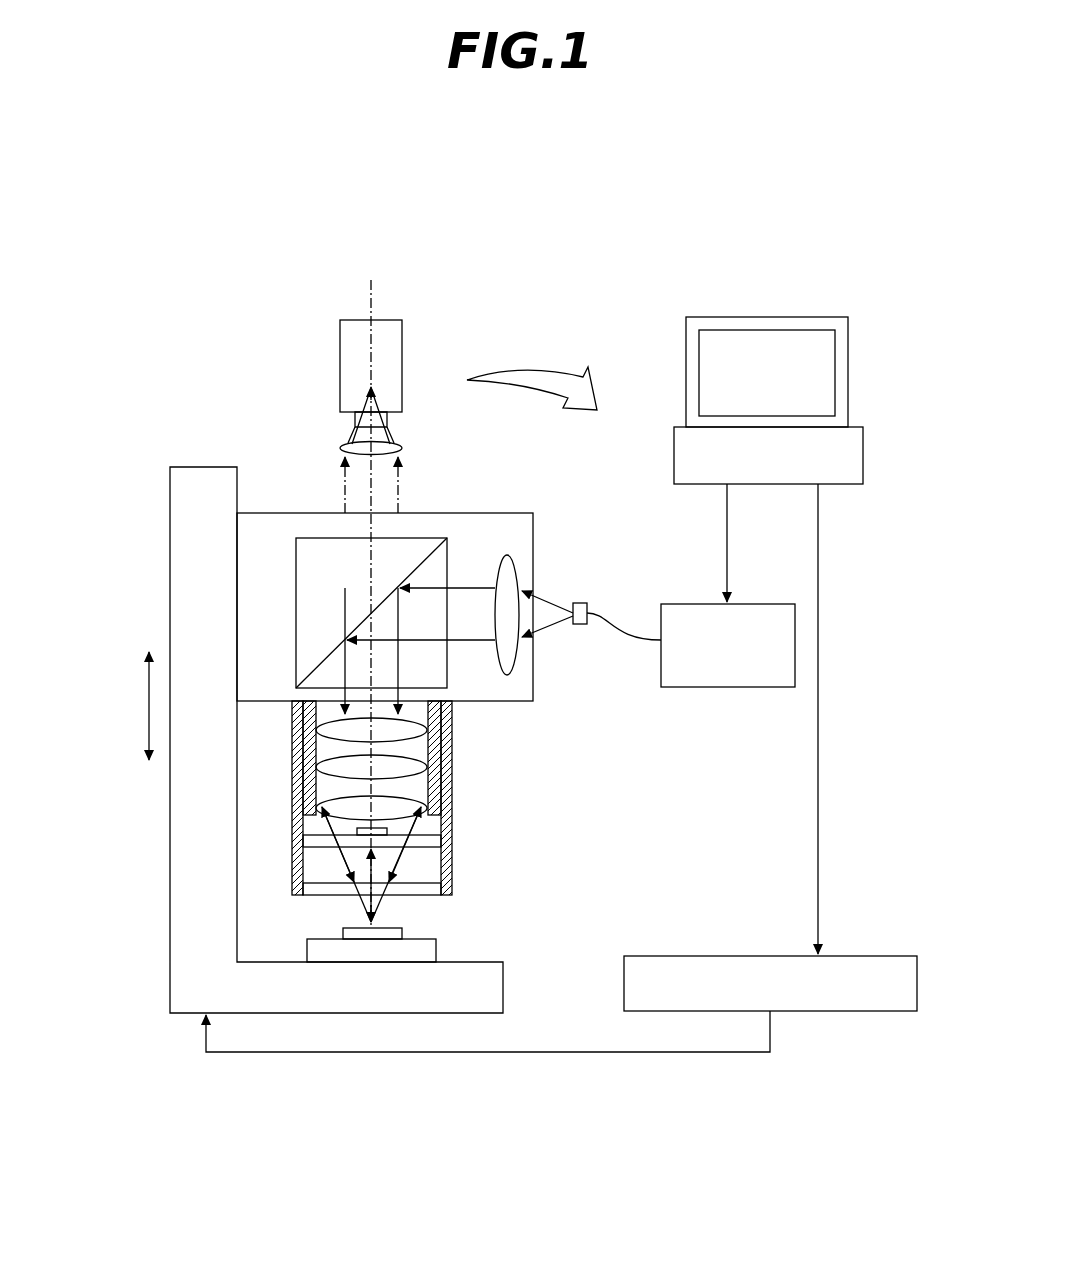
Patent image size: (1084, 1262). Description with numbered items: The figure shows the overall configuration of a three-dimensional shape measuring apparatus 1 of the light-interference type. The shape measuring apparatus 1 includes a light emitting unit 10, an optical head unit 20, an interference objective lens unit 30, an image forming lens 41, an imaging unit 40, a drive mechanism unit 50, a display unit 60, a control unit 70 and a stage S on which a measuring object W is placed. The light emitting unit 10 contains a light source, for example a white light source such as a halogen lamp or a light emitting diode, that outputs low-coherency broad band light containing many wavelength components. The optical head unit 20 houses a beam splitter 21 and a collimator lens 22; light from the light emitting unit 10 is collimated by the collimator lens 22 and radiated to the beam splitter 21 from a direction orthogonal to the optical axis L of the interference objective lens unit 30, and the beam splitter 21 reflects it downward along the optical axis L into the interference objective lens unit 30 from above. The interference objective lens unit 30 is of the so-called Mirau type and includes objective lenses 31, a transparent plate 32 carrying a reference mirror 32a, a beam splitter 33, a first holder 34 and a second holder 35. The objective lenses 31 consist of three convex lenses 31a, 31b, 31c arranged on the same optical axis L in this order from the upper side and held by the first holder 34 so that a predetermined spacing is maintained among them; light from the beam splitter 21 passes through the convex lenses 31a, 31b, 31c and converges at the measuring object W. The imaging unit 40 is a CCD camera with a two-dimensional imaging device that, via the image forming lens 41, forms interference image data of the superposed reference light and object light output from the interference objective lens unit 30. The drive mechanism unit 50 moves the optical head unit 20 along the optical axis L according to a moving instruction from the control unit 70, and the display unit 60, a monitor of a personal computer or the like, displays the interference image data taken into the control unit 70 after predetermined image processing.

The shape measuring apparatus 1 is at (562, 212).
The light emitting unit 10 is at (691, 688).
The optical head unit 20 is at (488, 512).
The beam splitter 21 is at (447, 553).
The collimator lens 22 is at (515, 572).
The interference objective lens unit 30 is at (273, 845).
The objective lenses 31 is at (556, 755).
The convex lens 31a is at (410, 733).
The convex lens 31b is at (410, 767).
The convex lens 31c is at (410, 807).
The transparent plate 32 is at (432, 842).
The reference mirror 32a is at (388, 825).
The beam splitter 33 is at (432, 888).
The first holder 34 is at (298, 708).
The second holder 35 is at (297, 780).
The imaging unit 40 is at (402, 348).
The image forming lens 41 is at (342, 445).
The drive mechanism unit 50 is at (706, 955).
The display unit 60 is at (772, 342).
The control unit 70 is at (862, 457).
The optical axis L is at (370, 588).
The measuring object W is at (402, 933).
The stage S is at (436, 952).